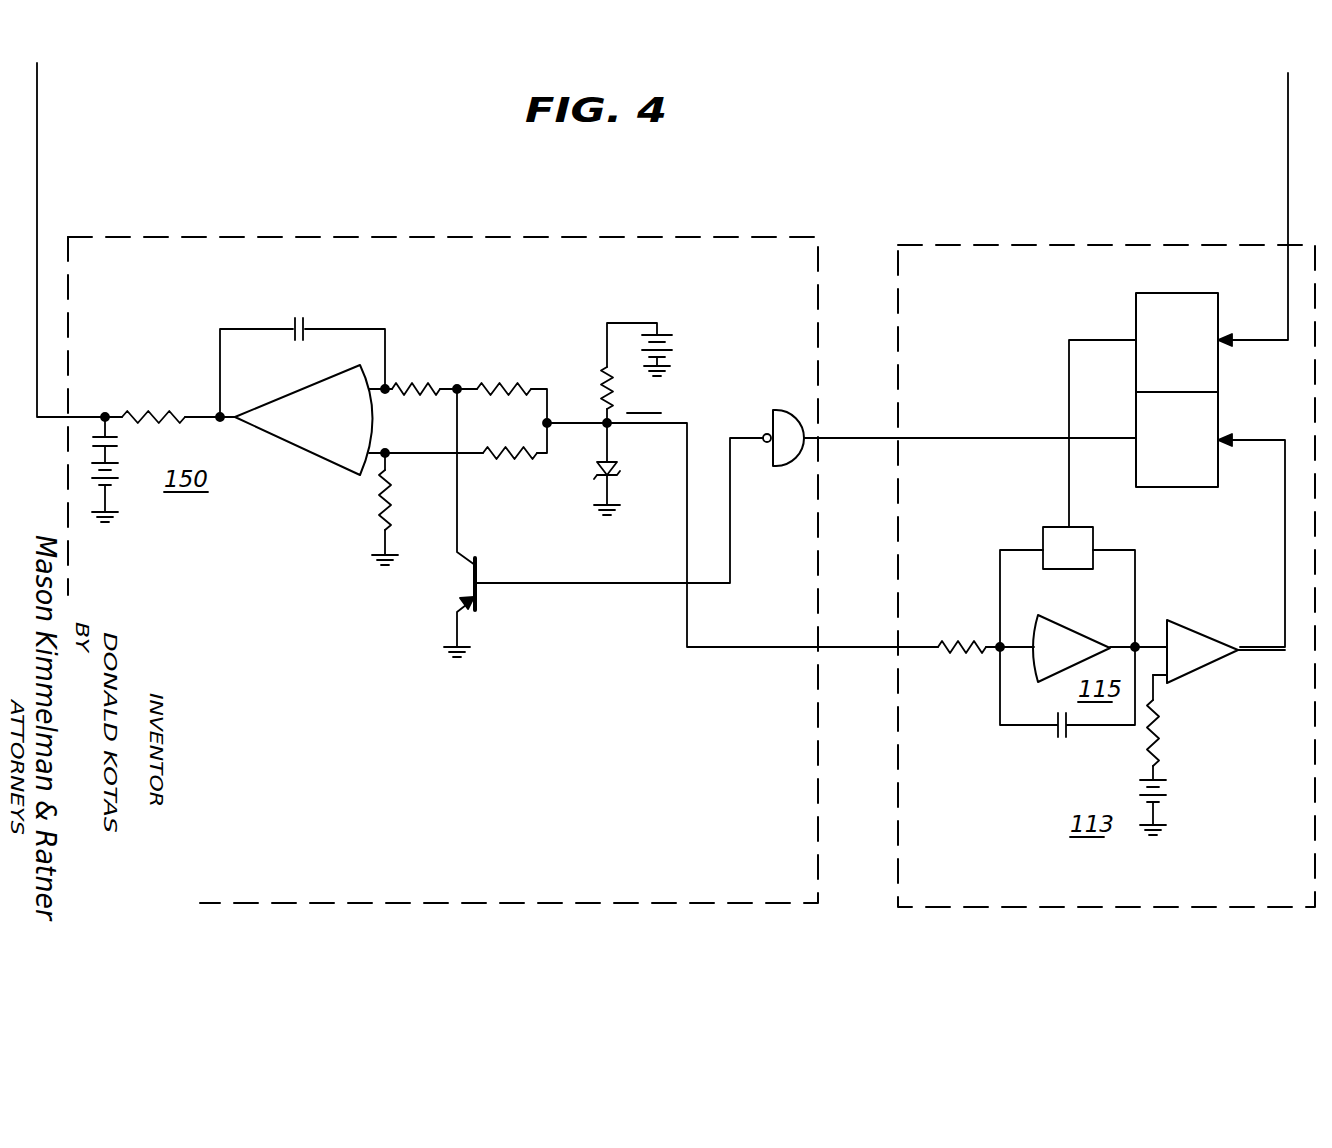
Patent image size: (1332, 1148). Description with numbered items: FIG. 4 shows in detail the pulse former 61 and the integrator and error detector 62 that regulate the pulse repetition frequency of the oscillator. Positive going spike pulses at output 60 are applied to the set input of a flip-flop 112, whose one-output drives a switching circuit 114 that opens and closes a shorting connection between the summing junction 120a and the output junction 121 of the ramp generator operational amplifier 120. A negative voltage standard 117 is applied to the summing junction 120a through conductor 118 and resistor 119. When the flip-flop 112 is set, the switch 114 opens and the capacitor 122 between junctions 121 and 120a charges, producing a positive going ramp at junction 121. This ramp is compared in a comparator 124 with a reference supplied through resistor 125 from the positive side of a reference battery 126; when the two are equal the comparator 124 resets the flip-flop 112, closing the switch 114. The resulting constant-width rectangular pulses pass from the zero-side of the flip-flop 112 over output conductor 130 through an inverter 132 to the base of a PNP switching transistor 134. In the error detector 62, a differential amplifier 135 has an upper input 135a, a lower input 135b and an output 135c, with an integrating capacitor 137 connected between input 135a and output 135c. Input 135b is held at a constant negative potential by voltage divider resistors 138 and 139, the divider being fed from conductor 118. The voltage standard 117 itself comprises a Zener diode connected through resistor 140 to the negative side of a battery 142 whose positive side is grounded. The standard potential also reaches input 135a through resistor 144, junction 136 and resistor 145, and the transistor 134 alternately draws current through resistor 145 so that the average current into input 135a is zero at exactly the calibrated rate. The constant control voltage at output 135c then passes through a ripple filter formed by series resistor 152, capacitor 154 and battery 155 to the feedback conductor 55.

The feedback conductor 55 is at (37, 228).
The output 60 is at (1288, 80).
The pulse former 61 is at (1260, 907).
The integrator and error detector 62 is at (655, 903).
The flip-flop 112 is at (1136, 302).
The switching circuit 114 is at (1093, 535).
The voltage standard 117 is at (636, 373).
The conductor 118 is at (592, 420).
The resistor 119 is at (960, 650).
The ramp generator operational amplifier 120 is at (1090, 602).
The summing junction 120a is at (1000, 645).
The output junction 121 is at (1137, 645).
The capacitor 122 is at (1058, 735).
The comparator 124 is at (1222, 648).
The resistor 125 is at (1155, 735).
The reference battery 126 is at (1160, 798).
The output conductor 130 is at (1012, 440).
The inverter 132 is at (777, 418).
The PNP switching transistor 134 is at (478, 572).
The differential input and single ended output amplifier 135 is at (298, 393).
The upper input 135a is at (385, 389).
The lower input 135b is at (385, 455).
The output 135c is at (220, 417).
The junction 136 is at (453, 392).
The integrating capacitor 137 is at (299, 318).
The voltage divider resistor 138 is at (495, 455).
The voltage divider resistor / Zener diode 139 is at (380, 512).
The resistor 140 is at (595, 375).
The battery 142 is at (672, 345).
The resistor 144 is at (503, 389).
The resistor 145 is at (414, 389).
The series resistor 152 is at (152, 416).
The capacitor 154 is at (117, 442).
The battery 155 is at (92, 476).